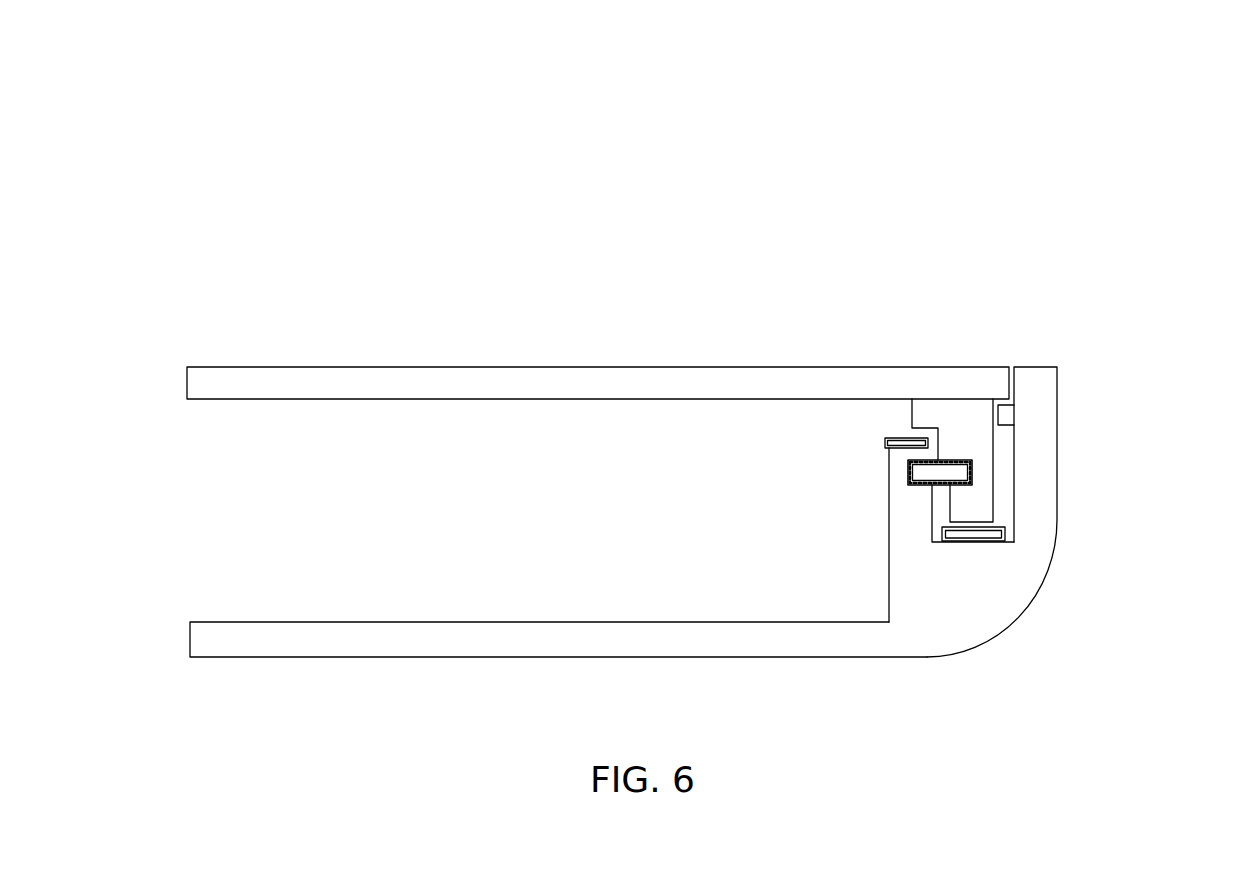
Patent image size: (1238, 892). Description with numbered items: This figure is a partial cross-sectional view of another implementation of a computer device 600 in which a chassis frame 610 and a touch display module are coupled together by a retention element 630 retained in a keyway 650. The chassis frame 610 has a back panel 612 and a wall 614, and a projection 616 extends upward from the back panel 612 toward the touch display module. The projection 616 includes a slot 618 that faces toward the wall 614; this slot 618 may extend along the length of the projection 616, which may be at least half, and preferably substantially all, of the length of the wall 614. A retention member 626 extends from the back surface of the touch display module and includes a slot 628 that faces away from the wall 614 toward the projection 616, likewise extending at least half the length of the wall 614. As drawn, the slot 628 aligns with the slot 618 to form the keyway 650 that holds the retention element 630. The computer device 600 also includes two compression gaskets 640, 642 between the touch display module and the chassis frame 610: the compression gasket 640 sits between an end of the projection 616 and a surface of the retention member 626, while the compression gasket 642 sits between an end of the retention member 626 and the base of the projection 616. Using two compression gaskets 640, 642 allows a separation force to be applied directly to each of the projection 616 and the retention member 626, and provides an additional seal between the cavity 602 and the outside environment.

The computer device 600 is at (257, 117).
The cavity 602 is at (368, 502).
The chassis frame 610 is at (474, 660).
The back panel 612 is at (510, 630).
The wall 614 is at (1057, 520).
The projection 616 is at (905, 520).
The slot 618 is at (908, 473).
The retention member 626 is at (946, 413).
The slot 628 is at (966, 462).
The retention element 630 is at (930, 478).
The compression gasket 640 is at (887, 443).
The compression gasket 642 is at (947, 533).
The keyway 650 is at (935, 458).